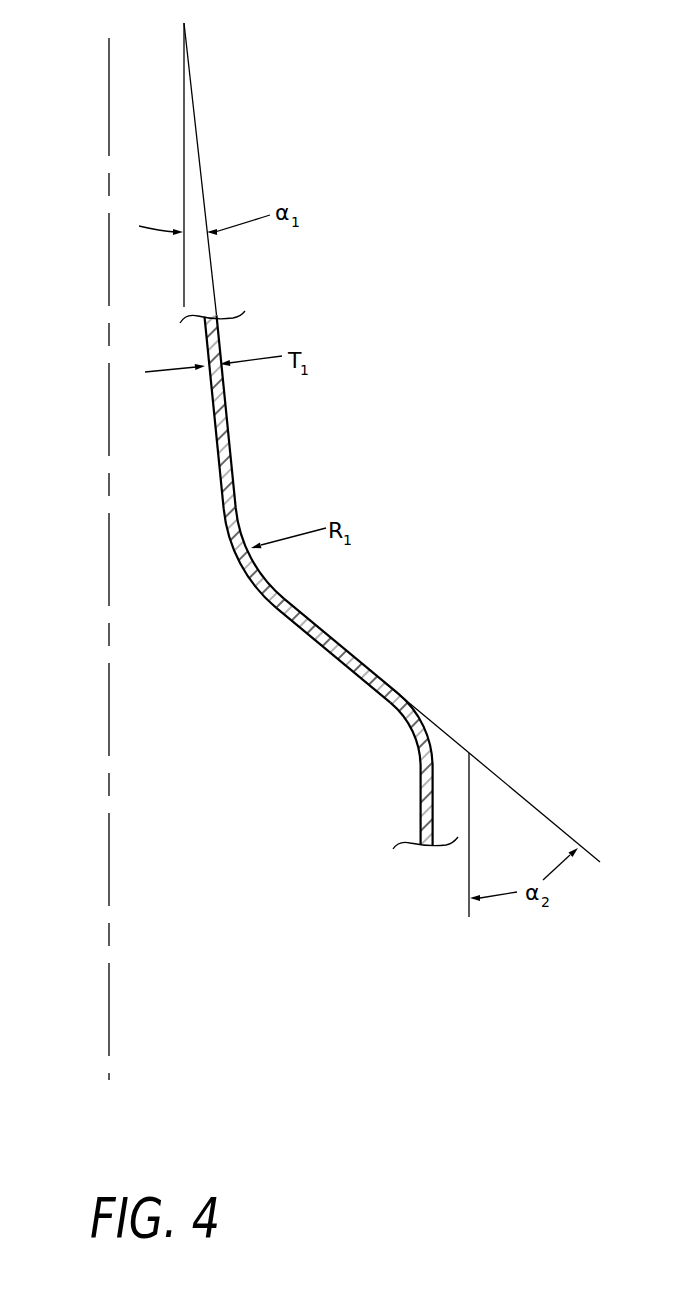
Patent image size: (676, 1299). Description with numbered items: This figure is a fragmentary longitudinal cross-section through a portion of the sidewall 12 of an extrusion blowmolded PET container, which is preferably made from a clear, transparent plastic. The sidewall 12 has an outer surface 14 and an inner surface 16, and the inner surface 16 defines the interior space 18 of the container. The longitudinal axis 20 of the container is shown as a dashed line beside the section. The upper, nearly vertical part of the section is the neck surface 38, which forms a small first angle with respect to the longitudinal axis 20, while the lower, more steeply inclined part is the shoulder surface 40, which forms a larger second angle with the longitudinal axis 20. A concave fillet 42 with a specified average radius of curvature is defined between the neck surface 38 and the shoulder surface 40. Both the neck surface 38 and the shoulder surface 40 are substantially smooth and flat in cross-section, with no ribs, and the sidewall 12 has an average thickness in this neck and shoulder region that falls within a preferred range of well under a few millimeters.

The sidewall 12 is at (343, 580).
The outer surface 14 is at (416, 727).
The inner surface 16 is at (333, 654).
The interior space 18 is at (213, 662).
The longitudinal axis 20 is at (109, 100).
The neck surface 38 is at (222, 441).
The shoulder surface 40 is at (334, 638).
The concave fillet 42 is at (250, 517).